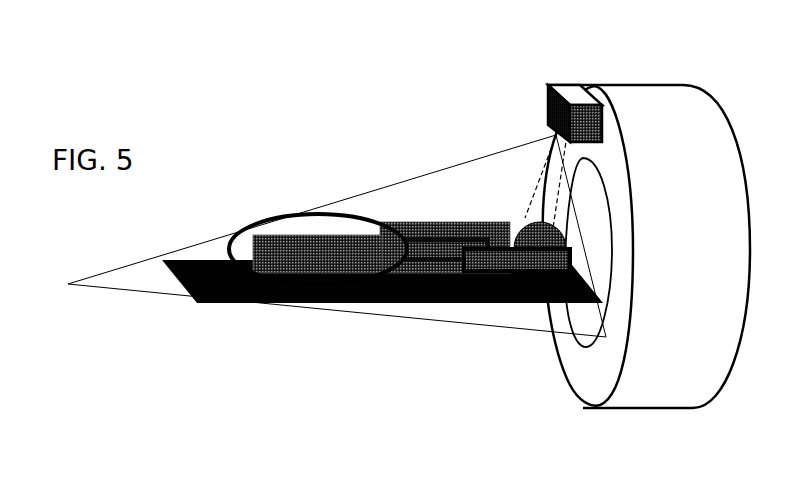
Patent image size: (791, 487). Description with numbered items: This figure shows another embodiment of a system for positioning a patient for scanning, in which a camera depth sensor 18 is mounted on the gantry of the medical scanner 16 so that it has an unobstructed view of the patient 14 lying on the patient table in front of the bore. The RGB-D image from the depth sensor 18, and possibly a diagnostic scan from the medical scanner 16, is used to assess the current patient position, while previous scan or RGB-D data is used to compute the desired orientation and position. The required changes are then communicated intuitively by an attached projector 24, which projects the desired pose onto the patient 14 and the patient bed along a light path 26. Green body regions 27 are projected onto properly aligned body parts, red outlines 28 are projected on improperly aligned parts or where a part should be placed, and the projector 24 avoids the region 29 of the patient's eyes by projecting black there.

The patient 14 is at (413, 270).
The medical scanner 16 is at (646, 246).
The depth sensor 18 is at (541, 87).
The projector 24 is at (548, 86).
The light path 26 is at (356, 192).
The green body regions 27 is at (257, 277).
The red outlines 28 is at (516, 280).
The region of the patient's eyes 29 is at (538, 195).